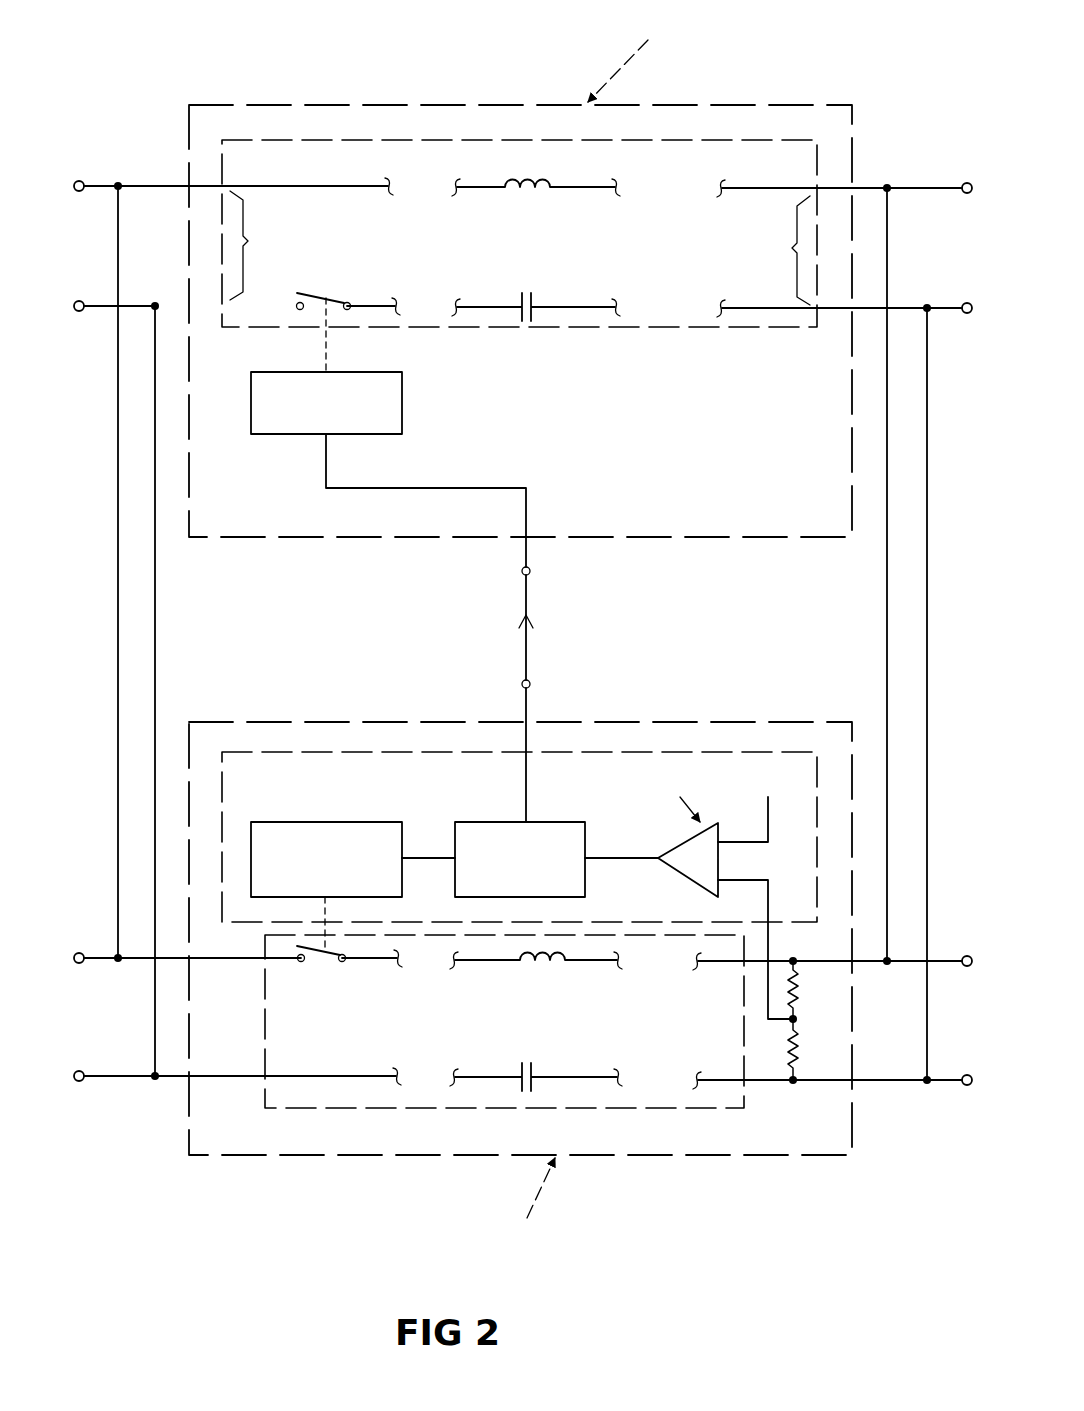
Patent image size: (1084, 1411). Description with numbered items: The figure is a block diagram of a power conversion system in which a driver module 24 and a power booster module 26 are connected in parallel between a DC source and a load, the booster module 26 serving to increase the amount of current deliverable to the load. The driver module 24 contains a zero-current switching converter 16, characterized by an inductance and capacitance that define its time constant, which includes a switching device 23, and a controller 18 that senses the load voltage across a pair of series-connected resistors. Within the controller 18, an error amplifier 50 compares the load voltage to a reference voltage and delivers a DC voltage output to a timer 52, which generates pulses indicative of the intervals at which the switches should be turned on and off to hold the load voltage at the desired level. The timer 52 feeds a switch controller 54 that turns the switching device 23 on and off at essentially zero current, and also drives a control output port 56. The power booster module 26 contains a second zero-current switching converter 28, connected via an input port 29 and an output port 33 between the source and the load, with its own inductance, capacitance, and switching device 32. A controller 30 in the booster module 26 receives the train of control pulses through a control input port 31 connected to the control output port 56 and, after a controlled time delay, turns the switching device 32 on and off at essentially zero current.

The zero-current switching converter 16 is at (744, 1128).
The controller 18 is at (697, 735).
The switching device 23 is at (322, 966).
The driver module 24 is at (743, 1157).
The power booster module 26 is at (770, 538).
The zero-current switching converter 28 is at (755, 330).
The input port 29 is at (251, 245).
The controller 30 is at (402, 395).
The control input port 31 is at (524, 549).
The switching device 32 is at (325, 292).
The output port 33 is at (785, 250).
The error amplifier 50 is at (672, 850).
The timer 52 is at (479, 822).
The switch controller 54 is at (353, 822).
The control output port 56 is at (526, 711).